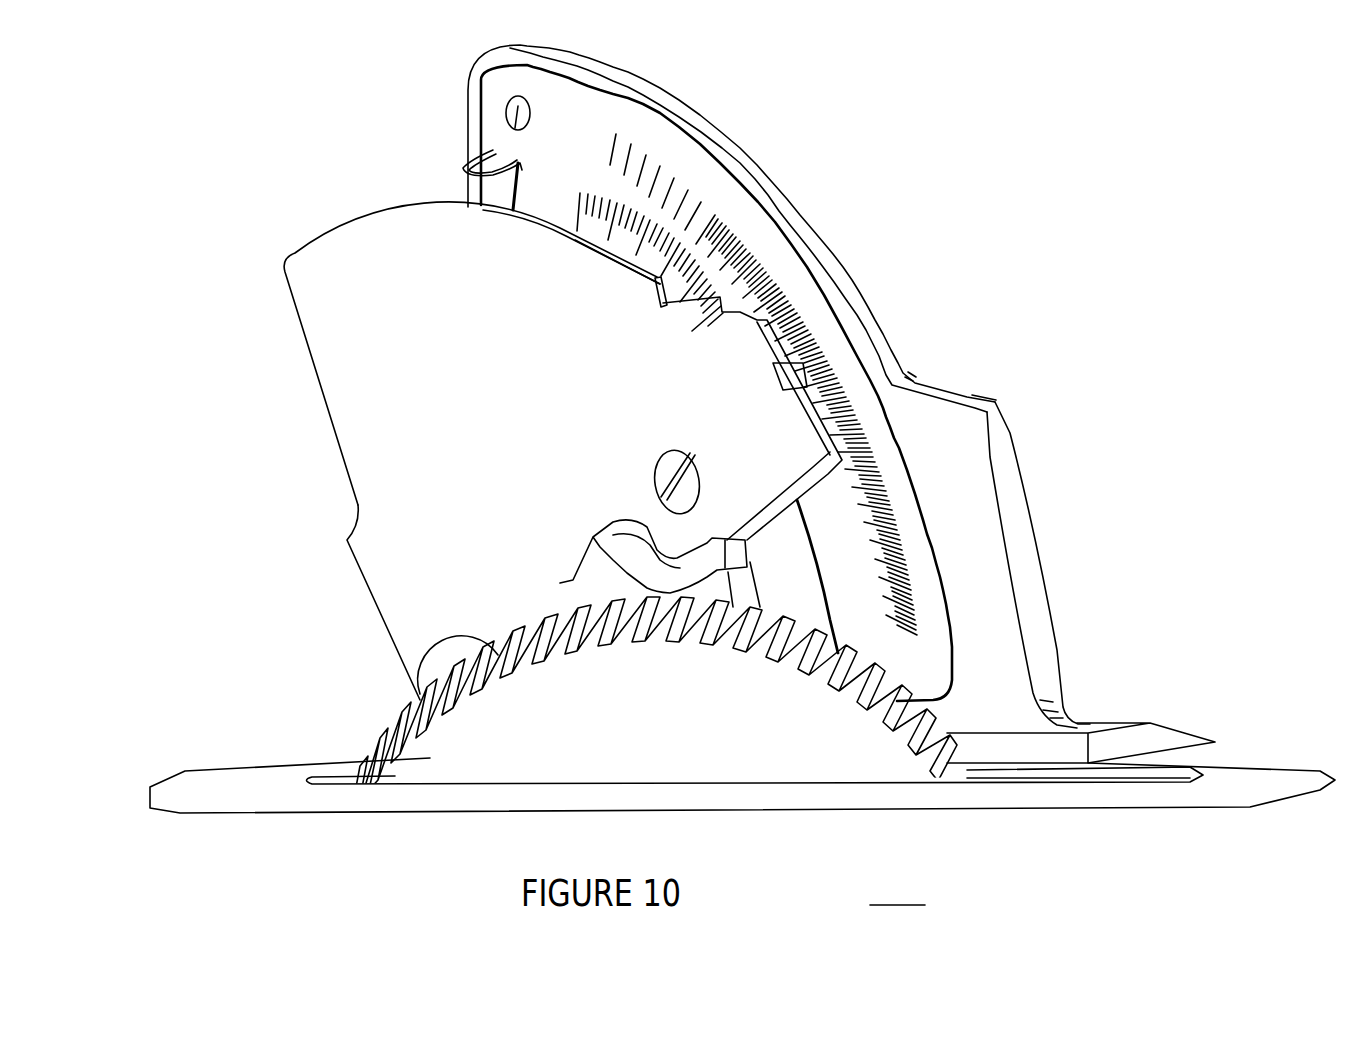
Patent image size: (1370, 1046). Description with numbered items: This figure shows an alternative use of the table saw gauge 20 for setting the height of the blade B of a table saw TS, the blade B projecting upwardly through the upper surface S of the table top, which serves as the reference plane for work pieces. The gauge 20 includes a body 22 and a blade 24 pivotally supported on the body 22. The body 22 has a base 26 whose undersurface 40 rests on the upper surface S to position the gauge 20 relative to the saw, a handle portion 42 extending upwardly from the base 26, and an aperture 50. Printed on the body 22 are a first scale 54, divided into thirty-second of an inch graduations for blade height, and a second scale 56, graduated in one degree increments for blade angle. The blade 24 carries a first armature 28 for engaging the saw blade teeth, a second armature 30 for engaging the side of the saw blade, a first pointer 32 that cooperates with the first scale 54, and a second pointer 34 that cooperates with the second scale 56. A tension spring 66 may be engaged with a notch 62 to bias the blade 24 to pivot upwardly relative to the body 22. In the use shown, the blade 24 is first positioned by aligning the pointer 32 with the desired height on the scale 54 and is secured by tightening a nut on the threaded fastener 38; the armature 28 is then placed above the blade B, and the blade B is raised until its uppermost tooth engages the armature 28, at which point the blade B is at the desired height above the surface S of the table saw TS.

The table saw gauge 20 is at (814, 176).
The body 22 is at (845, 252).
The blade 24 is at (318, 373).
The base 26 is at (1050, 750).
The first armature 28 is at (573, 580).
The second armature 30 is at (375, 610).
The first pointer 32 is at (793, 377).
The second pointer 34 is at (652, 268).
The threaded fastener 38 is at (655, 478).
The undersurface 40 is at (1000, 764).
The handle portion 42 is at (980, 523).
The aperture 50 is at (467, 142).
The first scale 54 is at (848, 356).
The second scale 56 is at (607, 250).
The notch 62 is at (727, 317).
The tension spring 66 is at (463, 163).
The upper surface S is at (282, 787).
The blade B is at (658, 744).
The table saw TS is at (897, 884).